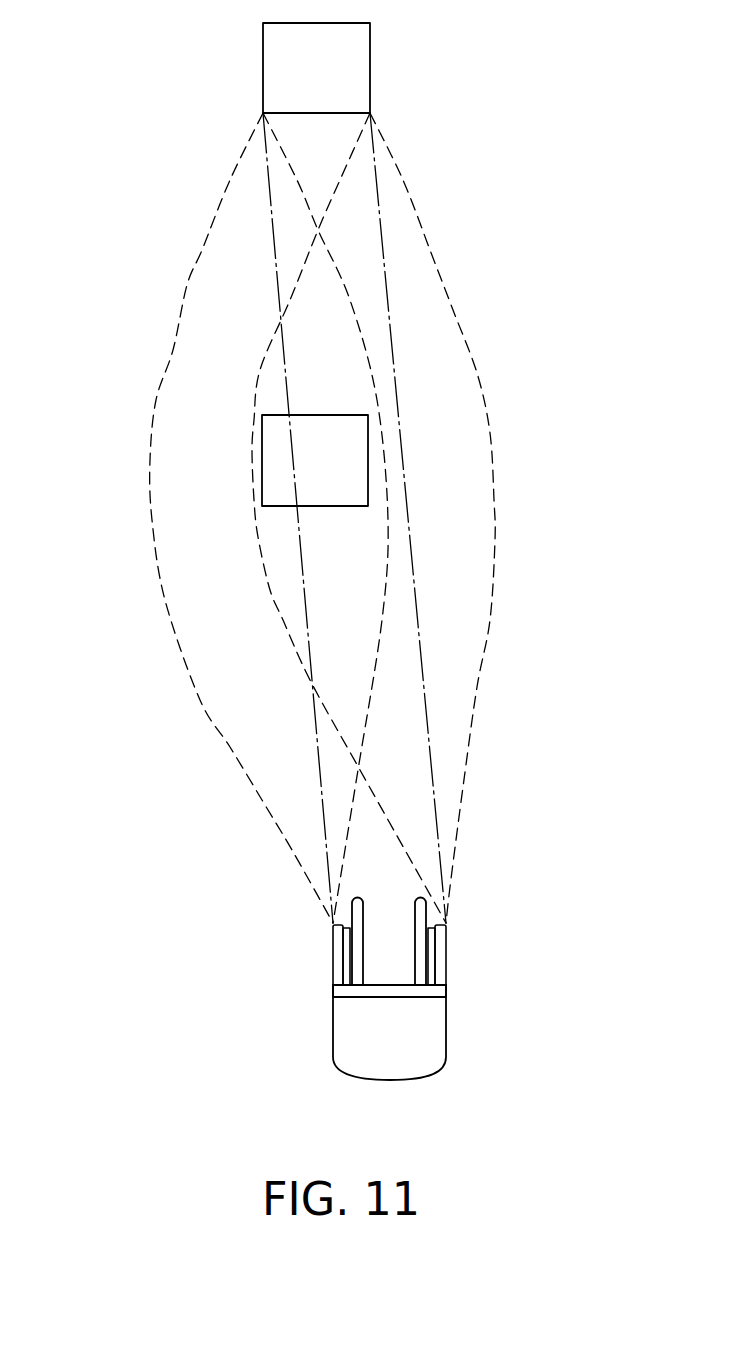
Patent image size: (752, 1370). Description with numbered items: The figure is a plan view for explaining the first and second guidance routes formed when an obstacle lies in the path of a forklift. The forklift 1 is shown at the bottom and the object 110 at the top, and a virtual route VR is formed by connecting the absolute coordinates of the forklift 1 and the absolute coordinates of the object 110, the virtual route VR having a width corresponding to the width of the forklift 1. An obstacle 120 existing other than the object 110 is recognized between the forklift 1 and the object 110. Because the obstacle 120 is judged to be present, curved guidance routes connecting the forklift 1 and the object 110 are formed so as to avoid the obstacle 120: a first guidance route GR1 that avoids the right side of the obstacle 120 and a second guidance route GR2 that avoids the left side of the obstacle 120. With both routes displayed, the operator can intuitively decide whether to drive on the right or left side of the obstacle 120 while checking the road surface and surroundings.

The object 110 is at (282, 67).
The obstacle 120 is at (273, 460).
The forklift 1 is at (423, 1037).
The first guidance route GR1 is at (430, 250).
The second guidance route GR2 is at (187, 285).
The virtual route VR is at (407, 505).